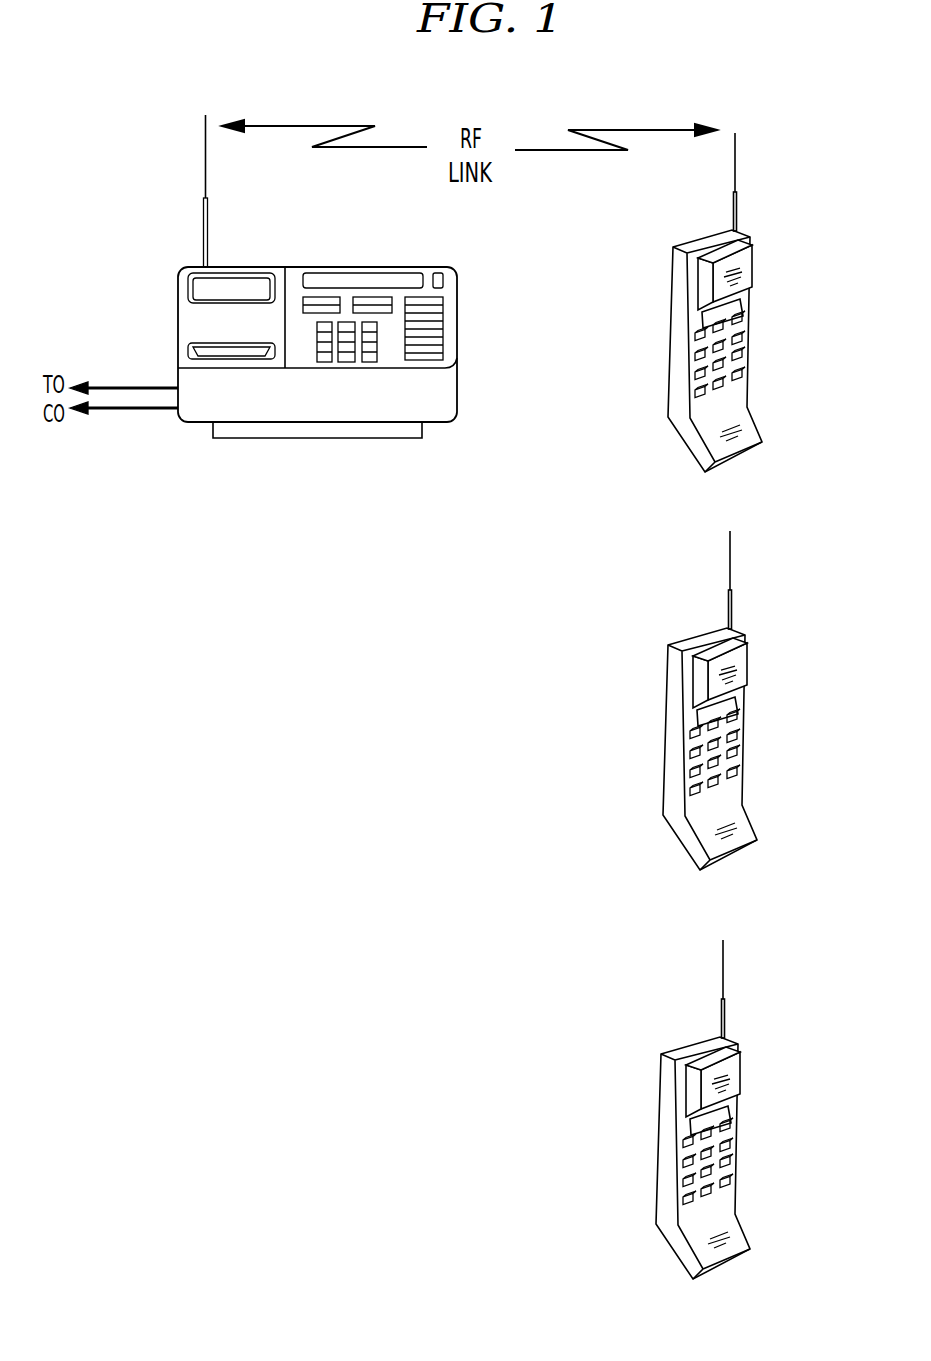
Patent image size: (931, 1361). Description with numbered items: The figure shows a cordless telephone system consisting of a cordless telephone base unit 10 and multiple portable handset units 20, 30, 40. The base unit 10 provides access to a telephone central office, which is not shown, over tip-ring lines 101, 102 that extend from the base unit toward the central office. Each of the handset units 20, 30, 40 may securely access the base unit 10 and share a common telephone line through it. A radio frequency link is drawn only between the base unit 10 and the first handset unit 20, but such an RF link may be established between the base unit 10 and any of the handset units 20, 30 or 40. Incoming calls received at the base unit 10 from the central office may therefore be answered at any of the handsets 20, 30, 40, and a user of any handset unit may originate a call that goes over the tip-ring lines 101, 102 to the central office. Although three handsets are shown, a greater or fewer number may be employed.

The cordless telephone base unit 10 is at (457, 337).
The handset unit 20 is at (752, 268).
The handset unit 30 is at (740, 700).
The handset unit 40 is at (733, 1109).
The tip-ring line 101 is at (110, 387).
The tip-ring line 102 is at (112, 412).